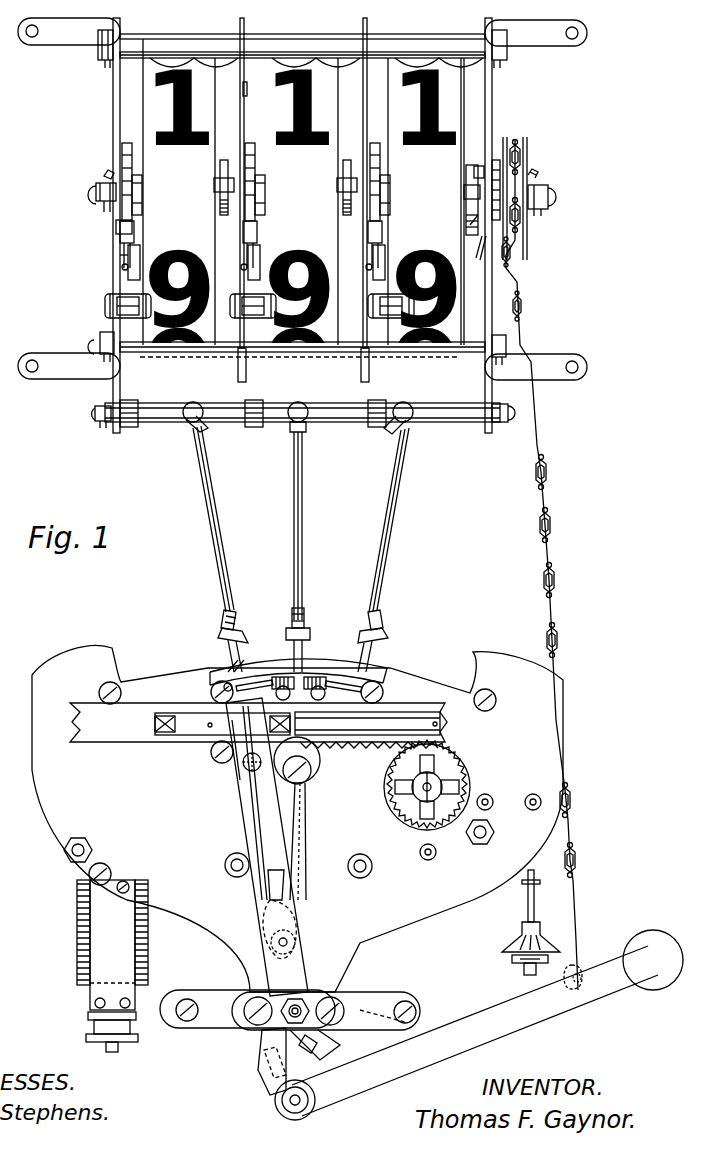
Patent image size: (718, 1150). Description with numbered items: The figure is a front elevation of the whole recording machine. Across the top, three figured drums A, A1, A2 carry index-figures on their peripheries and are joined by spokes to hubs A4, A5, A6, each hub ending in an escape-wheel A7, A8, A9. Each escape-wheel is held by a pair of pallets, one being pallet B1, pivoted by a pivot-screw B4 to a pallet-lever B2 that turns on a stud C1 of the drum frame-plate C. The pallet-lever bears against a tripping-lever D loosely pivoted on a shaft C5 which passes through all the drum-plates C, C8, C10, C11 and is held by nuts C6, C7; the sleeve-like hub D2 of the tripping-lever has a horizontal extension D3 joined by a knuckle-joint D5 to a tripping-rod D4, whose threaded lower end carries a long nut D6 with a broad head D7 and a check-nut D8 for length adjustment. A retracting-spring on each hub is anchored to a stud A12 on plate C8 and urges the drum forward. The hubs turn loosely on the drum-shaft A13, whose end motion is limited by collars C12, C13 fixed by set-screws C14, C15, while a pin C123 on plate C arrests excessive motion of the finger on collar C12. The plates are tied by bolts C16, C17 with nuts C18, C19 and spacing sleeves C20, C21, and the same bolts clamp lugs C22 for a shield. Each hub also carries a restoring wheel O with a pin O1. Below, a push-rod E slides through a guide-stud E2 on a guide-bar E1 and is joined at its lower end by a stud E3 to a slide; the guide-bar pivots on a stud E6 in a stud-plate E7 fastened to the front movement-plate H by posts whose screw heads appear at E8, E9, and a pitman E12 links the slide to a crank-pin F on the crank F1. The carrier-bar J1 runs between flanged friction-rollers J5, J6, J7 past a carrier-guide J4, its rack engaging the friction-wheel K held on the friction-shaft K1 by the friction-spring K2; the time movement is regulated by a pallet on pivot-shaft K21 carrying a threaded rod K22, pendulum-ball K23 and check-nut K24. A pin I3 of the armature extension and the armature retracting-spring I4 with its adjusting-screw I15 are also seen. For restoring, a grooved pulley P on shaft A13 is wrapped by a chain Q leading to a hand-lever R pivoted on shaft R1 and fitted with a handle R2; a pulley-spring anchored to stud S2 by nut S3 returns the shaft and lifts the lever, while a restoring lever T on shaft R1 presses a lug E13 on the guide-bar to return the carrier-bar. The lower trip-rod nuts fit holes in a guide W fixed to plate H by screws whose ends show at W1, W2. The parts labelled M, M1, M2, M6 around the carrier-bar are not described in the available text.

The figured drum A is at (180, 239).
The figured drum A1 is at (300, 239).
The figured drum A2 is at (427, 239).
The hub A4 is at (140, 190).
The hub A5 is at (263, 190).
The hub A6 is at (389, 190).
The escape-wheel A7 is at (127, 143).
The escape-wheel A8 is at (251, 143).
The escape-wheel A9 is at (375, 143).
The stud A12 is at (92, 200).
The drum-shaft A13 is at (556, 197).
The pallet B1 is at (116, 230).
The pallet-lever B2 is at (128, 256).
The pivot-screw B4 is at (120, 268).
The drum frame-plate C is at (112, 103).
The stud C1 is at (105, 306).
The shaft C5 is at (95, 412).
The nut C6 is at (104, 428).
The nut C7 is at (500, 423).
The drum-plate C8 is at (234, 380).
The drum-plate C10 is at (345, 381).
The drum-plate C11 is at (493, 90).
The collar C12 is at (96, 186).
The collar C13 is at (545, 214).
The set-screw C14 is at (105, 176).
The set-screw C15 is at (553, 172).
The bolt C16 is at (98, 46).
The bolt C17 is at (100, 350).
The nut C18 is at (106, 62).
The nut C19 is at (504, 330).
The sleeve C20 is at (130, 36).
The sleeve C21 is at (180, 356).
The lug C22 is at (302, 199).
The pin C123 is at (104, 210).
The tripping-lever D is at (124, 380).
The hub of tripping-lever D2 is at (160, 424).
The horizontal extension D3 is at (190, 404).
The tripping-rod D4 is at (218, 500).
The knuckle-joint D5 is at (192, 430).
The long nut D6 is at (226, 646).
The broad head D7 is at (220, 685).
The check-nut D8 is at (222, 628).
The push-rod E is at (256, 800).
The guide-bar E1 is at (246, 788).
The guide-stud E2 is at (242, 764).
The stud E3 is at (288, 940).
The stud E6 is at (280, 1022).
The stud-plate E7 is at (345, 996).
The screw head E8 is at (244, 990).
The screw head E9 is at (384, 978).
The pitman E12 is at (302, 906).
The lug E13 is at (320, 1050).
The crank-pin F is at (312, 780).
The crank F1 is at (297, 760).
The front movement-plate H is at (297, 819).
The pin I3 is at (485, 838).
The retracting-spring I4 is at (476, 842).
The adjusting-screw I15 is at (112, 966).
The carrier-bar J1 is at (258, 722).
The carrier-guide J4 is at (354, 795).
The flanged friction-roller J5 is at (210, 694).
The flanged friction-roller J6 is at (210, 752).
The flanged friction-roller J7 is at (384, 692).
The friction-wheel K is at (450, 760).
The friction-shaft K1 is at (420, 792).
The friction-spring K2 is at (450, 788).
The pivot-shaft K21 is at (531, 810).
The threaded rod K22 is at (528, 896).
The pendulum-ball K23 is at (510, 950).
The check-nut K24 is at (522, 968).
The slot M is at (162, 735).
The slide M1 is at (222, 714).
The slide arm M2 is at (255, 803).
The rack M6 is at (330, 748).
The wheel O is at (465, 178).
The pin O1 is at (477, 162).
The grooved pulley P is at (528, 150).
The chain Q is at (530, 302).
The hand-lever R is at (475, 1031).
The shaft R1 is at (290, 1108).
The handle R2 is at (653, 960).
The stud S2 is at (494, 250).
The nut S3 is at (478, 260).
The carrier-bar-restoring lever T is at (270, 1082).
The guide W is at (298, 675).
The screw end W1 is at (292, 692).
The screw end W2 is at (326, 693).